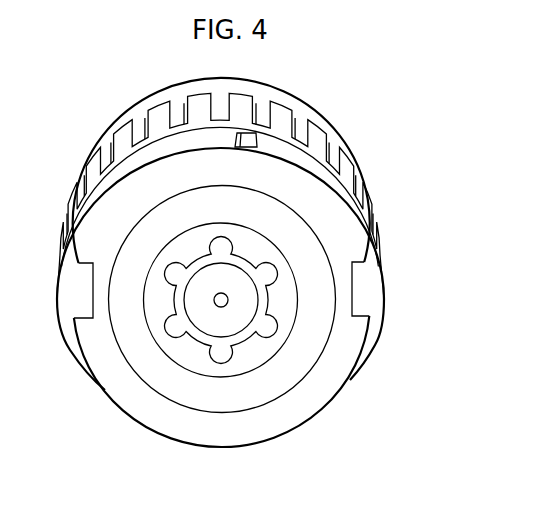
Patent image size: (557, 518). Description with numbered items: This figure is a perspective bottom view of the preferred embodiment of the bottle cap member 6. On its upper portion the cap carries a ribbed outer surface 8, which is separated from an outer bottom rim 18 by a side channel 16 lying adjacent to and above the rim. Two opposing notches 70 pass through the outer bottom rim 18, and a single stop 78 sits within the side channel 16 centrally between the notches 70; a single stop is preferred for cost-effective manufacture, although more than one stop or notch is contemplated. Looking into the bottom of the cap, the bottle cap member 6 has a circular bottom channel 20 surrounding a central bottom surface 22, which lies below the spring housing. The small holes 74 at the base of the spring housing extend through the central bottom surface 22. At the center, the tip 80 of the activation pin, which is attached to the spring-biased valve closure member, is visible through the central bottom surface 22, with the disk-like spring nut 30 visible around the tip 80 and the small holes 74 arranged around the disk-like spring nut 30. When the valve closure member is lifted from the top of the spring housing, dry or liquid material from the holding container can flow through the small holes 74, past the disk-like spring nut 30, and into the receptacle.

The bottle cap member 6 is at (348, 61).
The ribbed outer surface 8 is at (93, 152).
The side channel 16 is at (300, 160).
The outer bottom rim 18 is at (245, 448).
The circular bottom channel 20 is at (205, 412).
The central bottom surface 22 is at (252, 358).
The disk-like spring nut 30 is at (243, 302).
The notch 70 is at (75, 288).
The small holes 74 is at (173, 275).
The stop 78 is at (248, 143).
The tip 80 is at (222, 299).